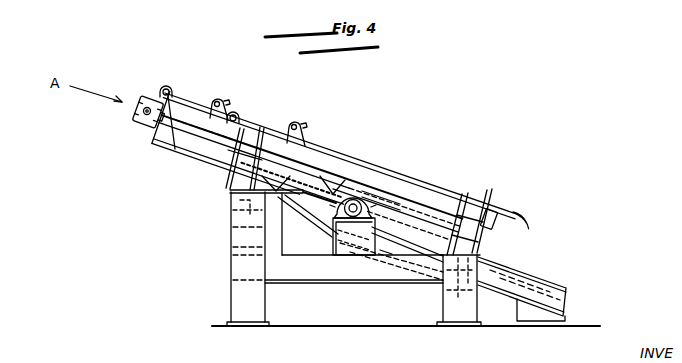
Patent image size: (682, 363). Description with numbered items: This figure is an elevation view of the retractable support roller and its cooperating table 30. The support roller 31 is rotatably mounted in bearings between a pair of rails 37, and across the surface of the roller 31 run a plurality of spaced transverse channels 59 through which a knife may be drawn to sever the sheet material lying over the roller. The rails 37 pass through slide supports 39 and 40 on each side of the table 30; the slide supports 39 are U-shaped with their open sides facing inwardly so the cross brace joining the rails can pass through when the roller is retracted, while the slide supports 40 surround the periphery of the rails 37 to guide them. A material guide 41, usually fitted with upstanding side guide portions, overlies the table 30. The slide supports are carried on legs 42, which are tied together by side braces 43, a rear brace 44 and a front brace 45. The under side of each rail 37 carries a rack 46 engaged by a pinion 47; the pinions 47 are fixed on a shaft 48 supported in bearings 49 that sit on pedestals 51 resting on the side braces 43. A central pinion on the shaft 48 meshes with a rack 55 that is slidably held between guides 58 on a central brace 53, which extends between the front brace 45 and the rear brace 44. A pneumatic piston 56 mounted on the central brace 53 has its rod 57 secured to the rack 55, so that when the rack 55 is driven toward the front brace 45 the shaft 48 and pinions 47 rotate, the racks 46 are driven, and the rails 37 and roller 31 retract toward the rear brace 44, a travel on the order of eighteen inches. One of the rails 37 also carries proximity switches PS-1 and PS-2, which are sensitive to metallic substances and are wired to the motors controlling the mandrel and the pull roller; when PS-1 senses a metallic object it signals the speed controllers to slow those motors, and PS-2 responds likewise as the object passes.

The table 30 is at (406, 174).
The support roller 31 is at (148, 97).
The rails 37 is at (193, 125).
The slide supports 39 is at (250, 147).
The slide supports 40 is at (486, 211).
The material guide 41 is at (518, 214).
The legs 42 is at (231, 308).
The side braces 43 is at (362, 271).
The rear brace 44 is at (476, 298).
The front brace 45 is at (250, 229).
The rack 46 is at (380, 197).
The pinion 47 is at (372, 205).
The shaft 48 is at (355, 192).
The bearings 49 is at (358, 200).
The pedestals 51 is at (333, 250).
The central brace 53 is at (293, 232).
The rack 55 is at (413, 247).
The pneumatic piston 56 is at (543, 284).
The rod 57 is at (480, 256).
The guides 58 is at (387, 252).
The transverse channels 59 is at (143, 127).
The proximity switch PS-1 is at (236, 113).
The proximity switch PS-2 is at (168, 88).